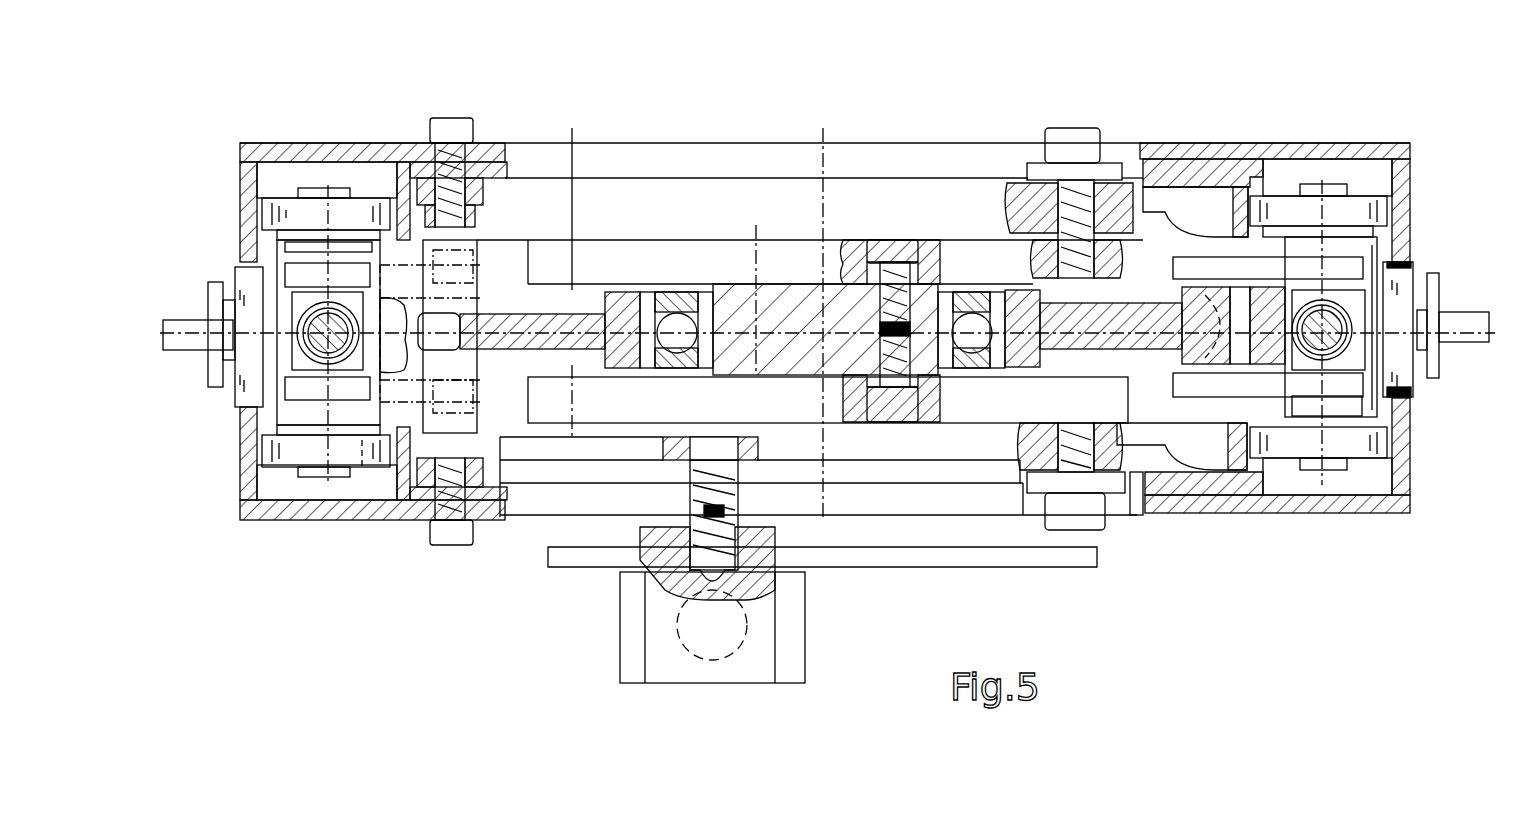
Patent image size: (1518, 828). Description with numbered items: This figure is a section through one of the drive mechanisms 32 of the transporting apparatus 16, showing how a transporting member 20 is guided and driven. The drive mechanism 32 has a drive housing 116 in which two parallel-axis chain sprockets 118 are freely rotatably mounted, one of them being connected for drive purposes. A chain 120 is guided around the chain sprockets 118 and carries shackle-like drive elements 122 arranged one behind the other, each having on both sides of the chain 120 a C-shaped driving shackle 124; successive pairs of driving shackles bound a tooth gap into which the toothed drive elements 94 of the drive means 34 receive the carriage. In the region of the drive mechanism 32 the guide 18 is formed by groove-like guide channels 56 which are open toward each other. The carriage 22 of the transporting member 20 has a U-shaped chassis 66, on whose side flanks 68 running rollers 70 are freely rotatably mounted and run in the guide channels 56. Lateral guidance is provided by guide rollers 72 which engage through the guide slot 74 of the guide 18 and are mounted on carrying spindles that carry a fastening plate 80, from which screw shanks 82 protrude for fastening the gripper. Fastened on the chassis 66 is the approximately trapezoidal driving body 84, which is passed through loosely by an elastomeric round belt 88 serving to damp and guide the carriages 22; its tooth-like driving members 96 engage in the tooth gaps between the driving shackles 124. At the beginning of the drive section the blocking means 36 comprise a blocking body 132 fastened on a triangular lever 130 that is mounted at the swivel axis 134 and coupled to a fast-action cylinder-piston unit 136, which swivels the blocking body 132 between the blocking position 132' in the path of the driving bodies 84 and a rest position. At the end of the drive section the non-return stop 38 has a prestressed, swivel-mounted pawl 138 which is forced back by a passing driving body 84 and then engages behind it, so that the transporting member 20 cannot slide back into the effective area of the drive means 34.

The transporting apparatus 16 is at (962, 120).
The guide 18 is at (292, 508).
The transporting member 20 is at (188, 265).
The carriage 22 is at (340, 190).
The drive mechanism 32 is at (825, 106).
The drive means 34 is at (462, 295).
The blocking means 36 is at (422, 358).
The non-return stop 38 is at (1180, 355).
The guide channel 56 is at (380, 178).
The chassis 66 is at (275, 250).
The side flank 68 is at (283, 235).
The running roller 70 is at (290, 212).
The guide roller 72 is at (292, 407).
The guide slot 74 is at (1400, 265).
The fastening plate 80 is at (210, 300).
The screw shank 82 is at (188, 345).
The driving body 84 is at (283, 428).
The round belt 88 is at (300, 345).
The toothed drive element 94 is at (1347, 402).
The driving member 96 is at (1282, 225).
The drive housing 116 is at (1010, 142).
The chain sprocket 118 is at (583, 317).
The chain 120 is at (1188, 398).
The drive element 122 is at (1173, 270).
The driving shackle 124 is at (1352, 385).
The triangular lever 130 is at (535, 450).
The blocking body 132 is at (463, 317).
The blocking position 132' is at (335, 515).
The swivel axis 134 is at (445, 547).
The cylinder-piston unit 136 is at (626, 640).
The pawl 138 is at (1283, 300).